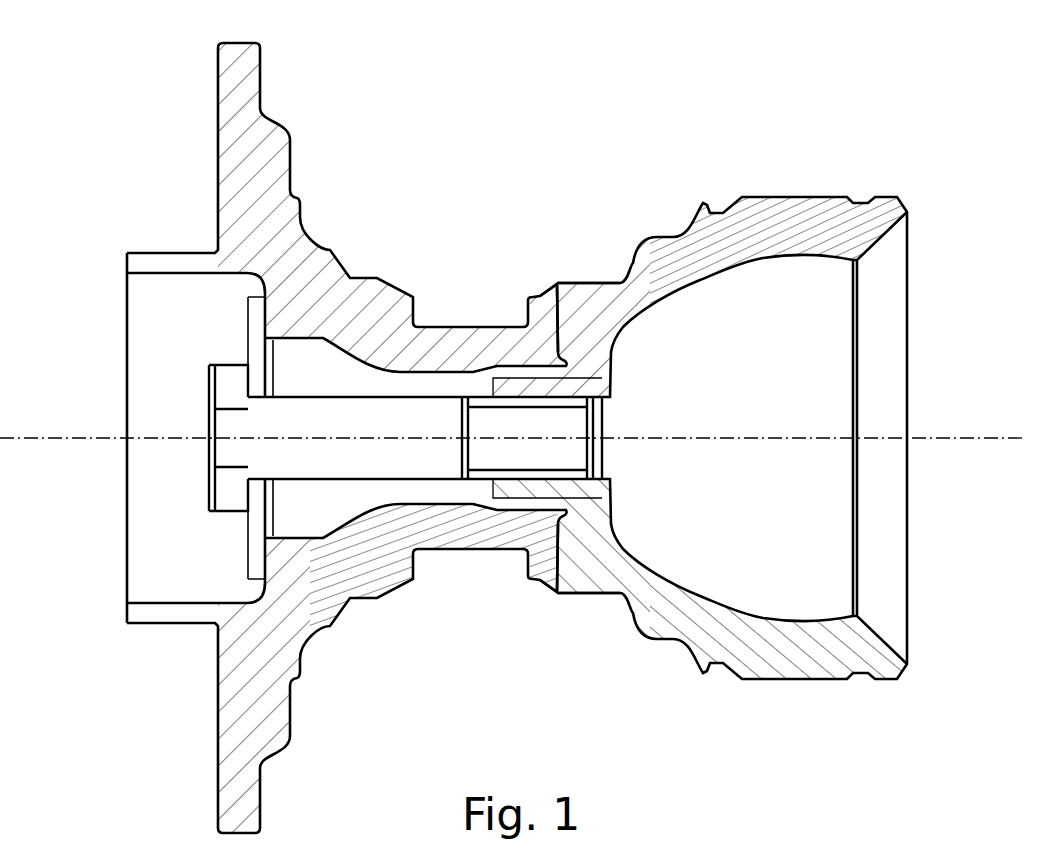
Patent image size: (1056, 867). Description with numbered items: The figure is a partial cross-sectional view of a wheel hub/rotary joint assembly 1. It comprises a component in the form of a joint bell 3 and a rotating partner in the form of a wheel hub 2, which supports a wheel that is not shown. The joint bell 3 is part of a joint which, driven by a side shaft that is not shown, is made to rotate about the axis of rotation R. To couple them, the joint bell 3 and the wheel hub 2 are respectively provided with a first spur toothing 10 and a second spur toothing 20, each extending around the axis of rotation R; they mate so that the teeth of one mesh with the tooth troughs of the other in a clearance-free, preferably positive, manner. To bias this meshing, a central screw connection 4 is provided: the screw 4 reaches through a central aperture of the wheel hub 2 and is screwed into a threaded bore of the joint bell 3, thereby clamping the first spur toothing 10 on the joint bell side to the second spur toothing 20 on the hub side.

The wheel hub/rotary joint assembly 1 is at (519, 438).
The wheel hub 2 is at (315, 595).
The joint bell 3 is at (783, 653).
The central screw connection 4 is at (232, 437).
The first spur toothing 10 is at (563, 305).
The second spur toothing 20 is at (555, 295).